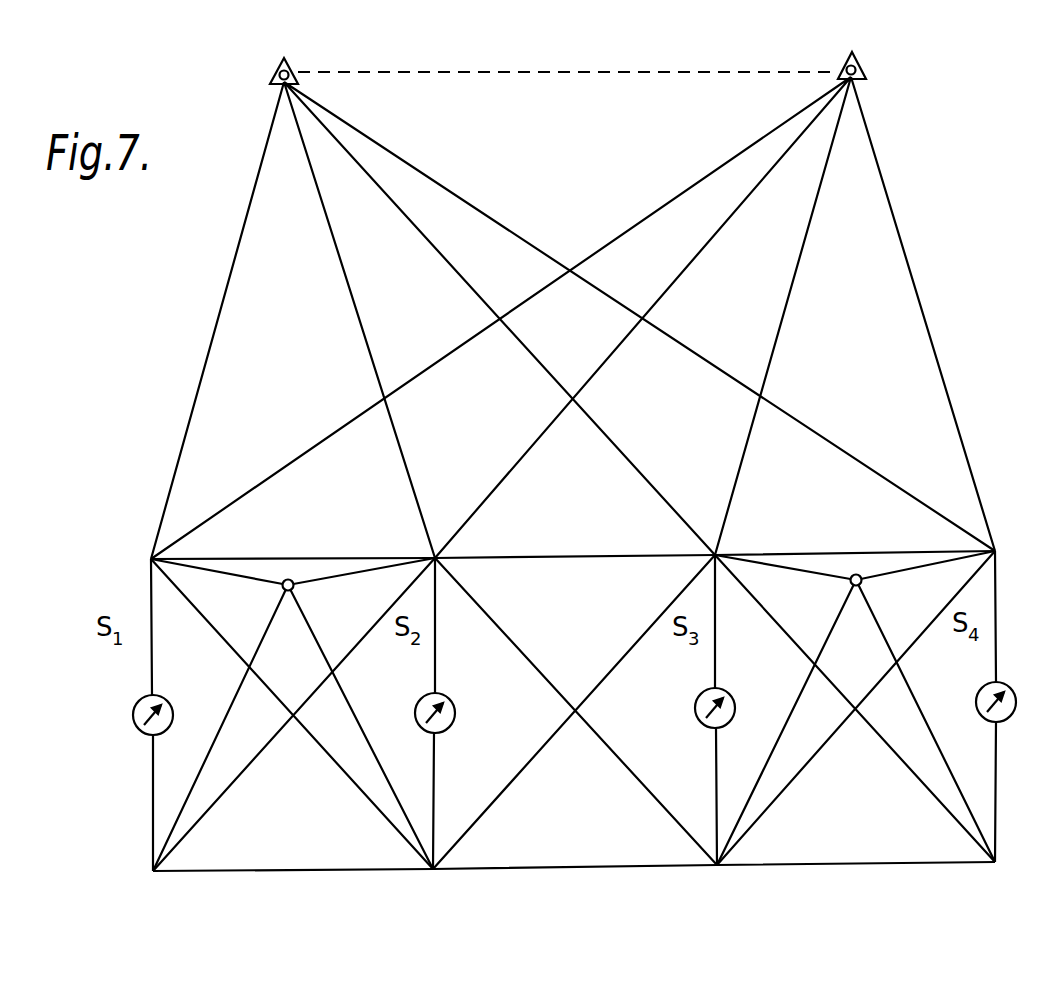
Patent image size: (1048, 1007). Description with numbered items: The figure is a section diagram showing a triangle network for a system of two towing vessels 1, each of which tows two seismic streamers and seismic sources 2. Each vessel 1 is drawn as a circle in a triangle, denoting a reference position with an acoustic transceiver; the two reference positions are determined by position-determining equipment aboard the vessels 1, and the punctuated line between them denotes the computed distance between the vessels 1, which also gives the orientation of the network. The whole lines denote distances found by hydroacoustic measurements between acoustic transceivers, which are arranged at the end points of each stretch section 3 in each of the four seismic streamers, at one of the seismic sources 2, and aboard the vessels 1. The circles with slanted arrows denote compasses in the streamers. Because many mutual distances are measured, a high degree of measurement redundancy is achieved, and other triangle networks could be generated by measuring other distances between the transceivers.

The towing vessel 1 is at (272, 78).
The seismic source 2 is at (291, 577).
The stretch section 3 is at (151, 775).